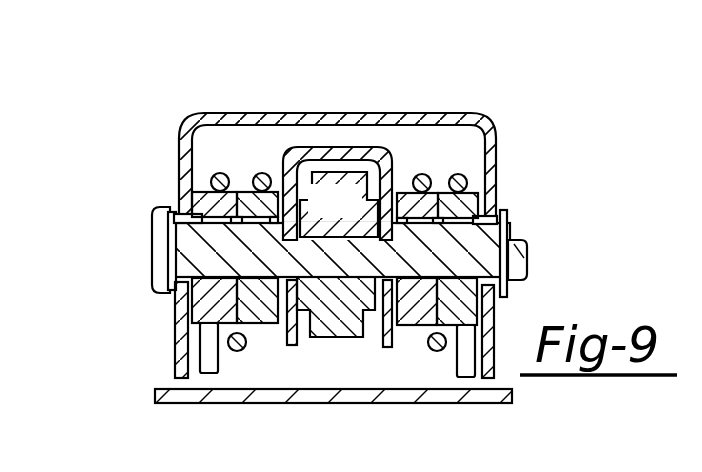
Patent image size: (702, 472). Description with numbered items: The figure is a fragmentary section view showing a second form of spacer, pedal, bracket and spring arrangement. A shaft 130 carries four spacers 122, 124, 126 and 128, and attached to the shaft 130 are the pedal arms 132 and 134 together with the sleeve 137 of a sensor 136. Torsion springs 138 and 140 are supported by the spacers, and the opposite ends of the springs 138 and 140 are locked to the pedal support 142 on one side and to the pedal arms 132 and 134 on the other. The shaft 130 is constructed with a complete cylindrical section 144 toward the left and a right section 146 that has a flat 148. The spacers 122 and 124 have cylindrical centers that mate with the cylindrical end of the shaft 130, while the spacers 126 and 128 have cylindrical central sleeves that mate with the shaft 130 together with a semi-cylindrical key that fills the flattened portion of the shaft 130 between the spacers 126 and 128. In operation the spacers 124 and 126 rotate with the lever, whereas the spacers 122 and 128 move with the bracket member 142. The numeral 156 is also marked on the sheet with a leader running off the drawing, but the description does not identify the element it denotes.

The spacer 122 is at (180, 316).
The spacer 124 is at (252, 328).
The spacer 126 is at (410, 327).
The spacer 128 is at (495, 305).
The shaft 130 is at (152, 248).
The pedal arm 132 is at (290, 346).
The pedal arm 134 is at (388, 348).
The sensor 136 is at (356, 212).
The sleeve 137 is at (372, 157).
The torsion spring 138 is at (255, 175).
The torsion spring 140 is at (457, 173).
The pedal support 142 is at (488, 156).
The complete cylindrical section 144 is at (172, 232).
The right section 146 is at (530, 266).
The flat 148 is at (512, 238).
The support member 156 is at (609, 471).